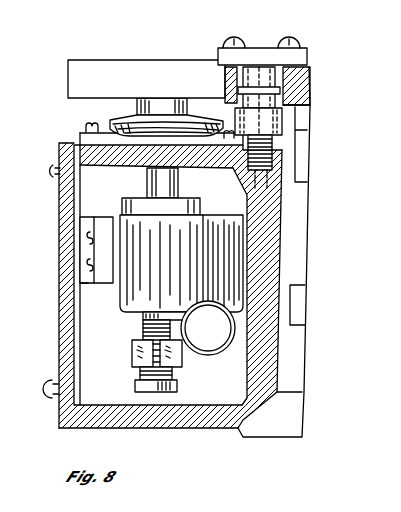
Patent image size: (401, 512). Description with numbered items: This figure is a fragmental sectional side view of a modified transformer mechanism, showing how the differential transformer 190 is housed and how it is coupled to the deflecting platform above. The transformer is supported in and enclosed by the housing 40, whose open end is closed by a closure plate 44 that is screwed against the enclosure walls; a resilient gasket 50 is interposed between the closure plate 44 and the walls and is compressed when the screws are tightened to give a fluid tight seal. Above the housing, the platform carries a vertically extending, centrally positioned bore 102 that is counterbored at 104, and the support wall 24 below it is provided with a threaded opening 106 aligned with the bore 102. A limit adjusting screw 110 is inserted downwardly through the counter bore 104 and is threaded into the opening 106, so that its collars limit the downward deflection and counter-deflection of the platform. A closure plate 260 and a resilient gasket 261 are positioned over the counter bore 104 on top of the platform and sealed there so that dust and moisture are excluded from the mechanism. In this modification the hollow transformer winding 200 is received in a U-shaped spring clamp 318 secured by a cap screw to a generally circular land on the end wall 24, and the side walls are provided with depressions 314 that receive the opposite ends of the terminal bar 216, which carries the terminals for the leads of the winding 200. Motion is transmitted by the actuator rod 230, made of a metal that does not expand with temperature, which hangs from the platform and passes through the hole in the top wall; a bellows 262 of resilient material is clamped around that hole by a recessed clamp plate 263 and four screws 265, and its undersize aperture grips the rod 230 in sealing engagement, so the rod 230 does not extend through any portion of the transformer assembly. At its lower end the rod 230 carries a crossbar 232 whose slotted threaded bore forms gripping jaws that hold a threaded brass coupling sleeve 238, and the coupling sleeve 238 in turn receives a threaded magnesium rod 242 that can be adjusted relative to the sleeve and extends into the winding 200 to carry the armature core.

The support wall 24 is at (272, 255).
The housing 40 is at (87, 370).
The closure plate 44 is at (62, 250).
The resilient gasket 50 is at (74, 415).
The bore 102 is at (224, 90).
The counterbore 104 is at (305, 72).
The threaded opening 106 is at (274, 192).
The limit adjusting screw 110 is at (285, 123).
The differential transformer 190 is at (117, 316).
The transformer winding 200 is at (213, 215).
The terminal bar 216 is at (107, 227).
The actuator rod 230 is at (147, 182).
The crossbar 232 is at (136, 350).
The coupling sleeve 238 is at (172, 384).
The magnesium rod 242 is at (178, 323).
The closure plate 260 is at (262, 54).
The resilient gasket 261 is at (218, 56).
The bellows 262 is at (114, 118).
The recessed clamp plate 263 is at (82, 136).
The screws 265 is at (92, 125).
The depressions 314 is at (86, 282).
The U-shaped spring clamp 318 is at (196, 157).